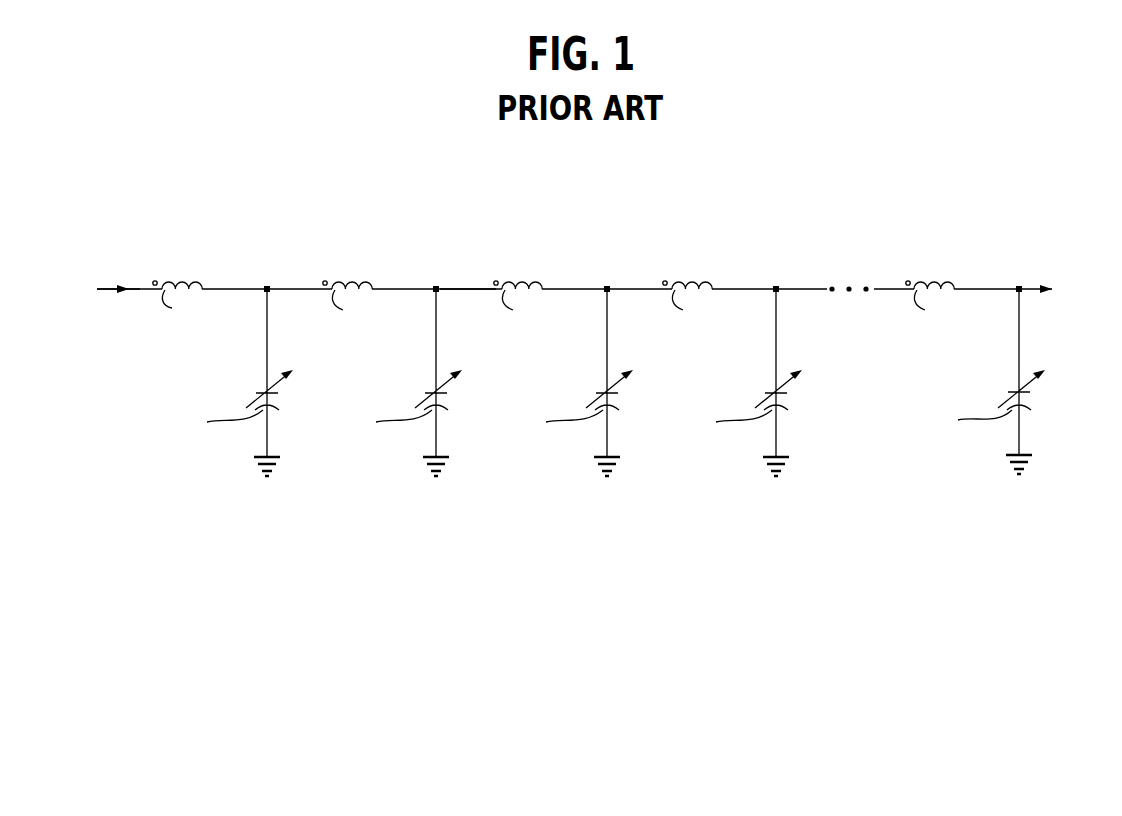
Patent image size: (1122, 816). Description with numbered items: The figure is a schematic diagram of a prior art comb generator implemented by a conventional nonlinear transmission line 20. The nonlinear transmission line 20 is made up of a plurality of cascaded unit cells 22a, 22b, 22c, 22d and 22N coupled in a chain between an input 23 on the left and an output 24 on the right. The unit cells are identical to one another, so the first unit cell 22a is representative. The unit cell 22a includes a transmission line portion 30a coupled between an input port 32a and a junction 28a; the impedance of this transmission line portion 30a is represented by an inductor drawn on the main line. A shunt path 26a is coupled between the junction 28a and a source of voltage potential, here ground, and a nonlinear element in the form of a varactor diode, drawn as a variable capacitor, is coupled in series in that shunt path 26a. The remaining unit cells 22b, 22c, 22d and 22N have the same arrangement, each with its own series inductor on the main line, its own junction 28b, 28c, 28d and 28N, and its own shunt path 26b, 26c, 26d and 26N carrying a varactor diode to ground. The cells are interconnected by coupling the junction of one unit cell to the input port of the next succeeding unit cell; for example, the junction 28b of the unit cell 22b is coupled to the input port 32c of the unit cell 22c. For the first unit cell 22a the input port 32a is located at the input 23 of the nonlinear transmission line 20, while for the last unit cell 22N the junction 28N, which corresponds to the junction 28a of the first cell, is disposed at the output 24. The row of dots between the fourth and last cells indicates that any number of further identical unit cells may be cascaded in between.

The nonlinear transmission line 20 is at (1066, 403).
The input 23 is at (105, 292).
The output 24 is at (1040, 297).
The unit cell 22a is at (181, 266).
The unit cell 22b is at (371, 266).
The unit cell 22c is at (484, 270).
The unit cell 22d is at (646, 264).
The unit cell 22N is at (947, 264).
The shunt path 26a is at (267, 428).
The shunt path 26b is at (436, 428).
The shunt path 26c is at (607, 428).
The shunt path 26d is at (776, 428).
The shunt path 26N is at (1014, 445).
The junction 28a is at (267, 287).
The junction 28b is at (436, 287).
The junction 28c is at (607, 287).
The junction 28d is at (776, 287).
The junction 28N is at (1019, 287).
The transmission line portion 30a is at (143, 288).
The input port 32a is at (133, 285).
The input port 32c is at (450, 290).